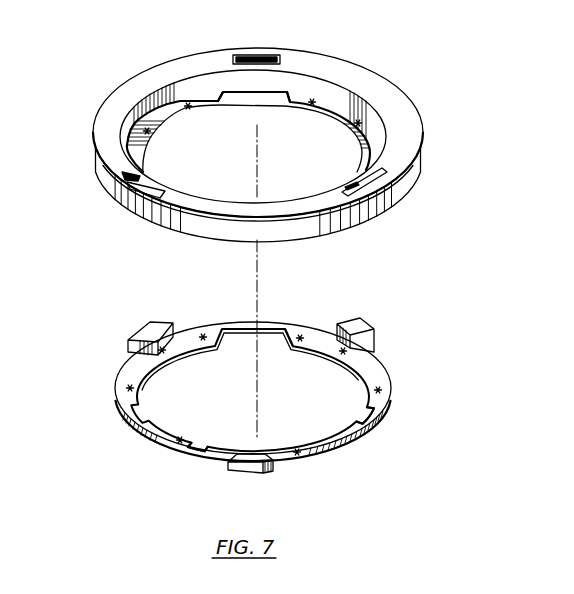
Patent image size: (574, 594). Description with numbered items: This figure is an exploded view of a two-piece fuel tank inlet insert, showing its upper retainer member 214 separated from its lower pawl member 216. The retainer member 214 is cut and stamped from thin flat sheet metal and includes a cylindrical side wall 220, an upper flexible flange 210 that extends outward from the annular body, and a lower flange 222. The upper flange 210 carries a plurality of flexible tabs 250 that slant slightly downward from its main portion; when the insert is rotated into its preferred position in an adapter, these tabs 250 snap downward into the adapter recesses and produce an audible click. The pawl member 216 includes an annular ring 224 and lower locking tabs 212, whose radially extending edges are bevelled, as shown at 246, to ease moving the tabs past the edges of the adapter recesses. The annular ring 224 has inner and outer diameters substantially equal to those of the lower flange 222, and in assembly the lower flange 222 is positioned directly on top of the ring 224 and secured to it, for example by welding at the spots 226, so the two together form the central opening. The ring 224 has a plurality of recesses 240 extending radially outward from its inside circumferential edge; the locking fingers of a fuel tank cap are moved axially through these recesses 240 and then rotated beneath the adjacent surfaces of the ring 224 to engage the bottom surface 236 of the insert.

The upper flexible flange 210 is at (263, 152).
The retainer member 214 is at (404, 83).
The cylindrical side wall 220 is at (303, 230).
The lower flange 222 is at (150, 148).
The bottom surface 236 is at (236, 103).
The spots 226 is at (316, 106).
The flexible tabs 250 is at (126, 182).
The pawl member 216 is at (249, 400).
The annular ring 224 is at (387, 400).
The lower locking tabs 212 is at (143, 323).
The bevelled edges 246 is at (168, 325).
The recesses 240 is at (280, 339).